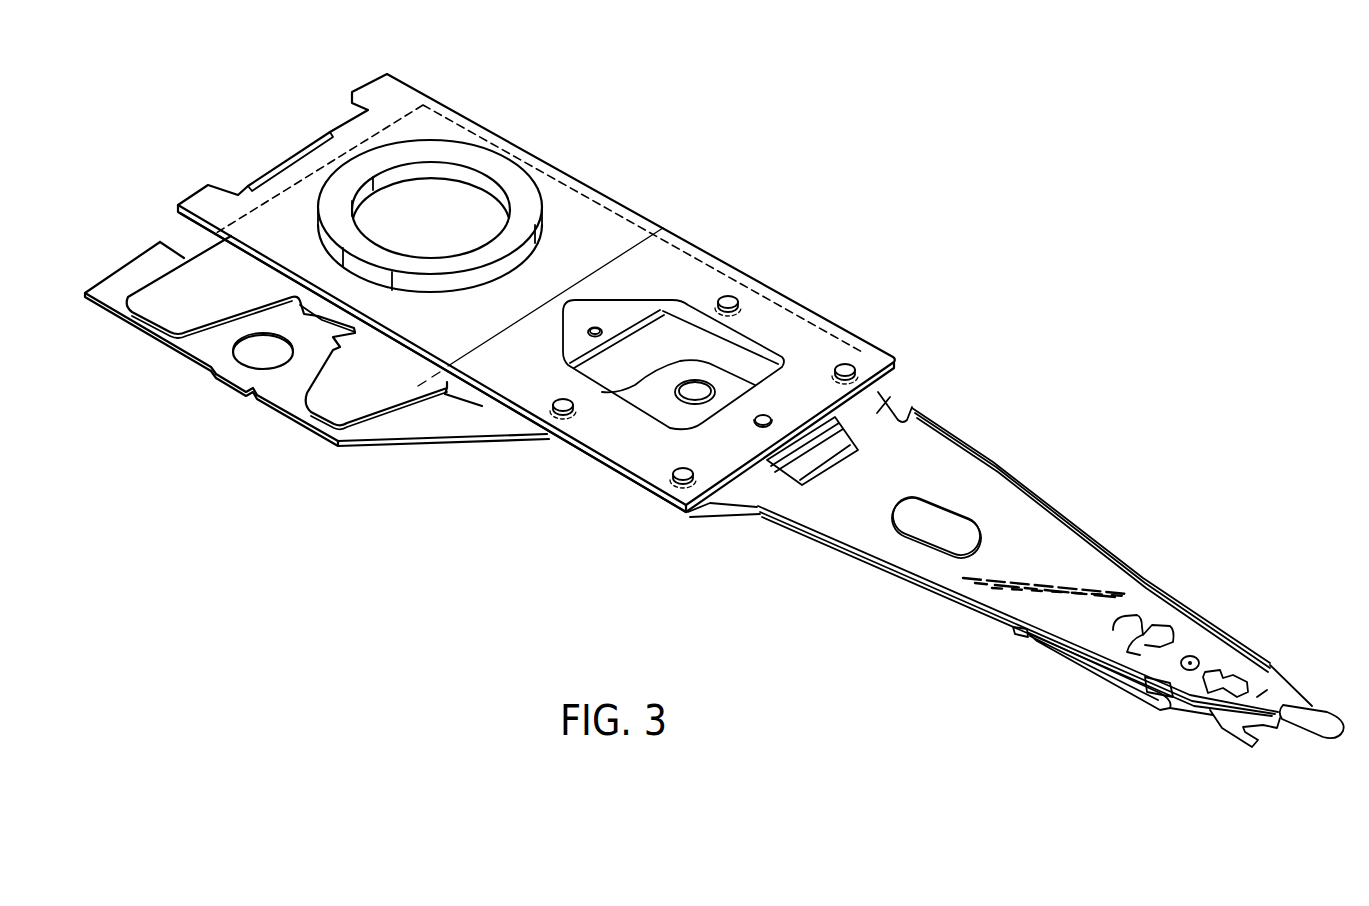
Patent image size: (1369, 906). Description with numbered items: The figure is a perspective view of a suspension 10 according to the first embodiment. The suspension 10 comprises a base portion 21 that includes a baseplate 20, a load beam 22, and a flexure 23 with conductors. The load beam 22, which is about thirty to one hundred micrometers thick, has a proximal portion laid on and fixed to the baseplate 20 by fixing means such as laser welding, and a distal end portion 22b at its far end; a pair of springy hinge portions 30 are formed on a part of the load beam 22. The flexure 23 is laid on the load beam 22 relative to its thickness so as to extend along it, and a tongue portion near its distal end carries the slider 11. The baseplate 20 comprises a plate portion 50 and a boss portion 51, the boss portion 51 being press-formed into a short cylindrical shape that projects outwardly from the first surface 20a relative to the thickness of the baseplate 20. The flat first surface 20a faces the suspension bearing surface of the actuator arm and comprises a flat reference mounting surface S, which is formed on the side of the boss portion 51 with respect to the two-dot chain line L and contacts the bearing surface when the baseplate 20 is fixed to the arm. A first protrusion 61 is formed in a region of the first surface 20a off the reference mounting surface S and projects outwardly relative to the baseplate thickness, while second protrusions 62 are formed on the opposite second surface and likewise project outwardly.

The suspension 10 is at (913, 168).
The slider 11 is at (1158, 686).
The baseplate 20 is at (700, 246).
The first surface 20a is at (630, 452).
The base portion 21 is at (493, 412).
The load beam 22 is at (1048, 509).
The distal end portion 22b is at (1327, 712).
The flexure 23 is at (1121, 699).
The hinge portions 30 is at (738, 496).
The plate portion 50 is at (435, 122).
The boss portion 51 is at (486, 160).
The first protrusion 61 is at (770, 414).
The second protrusions 62 is at (757, 318).
The reference mounting surface S is at (585, 208).
The two-dot chain line L is at (650, 210).